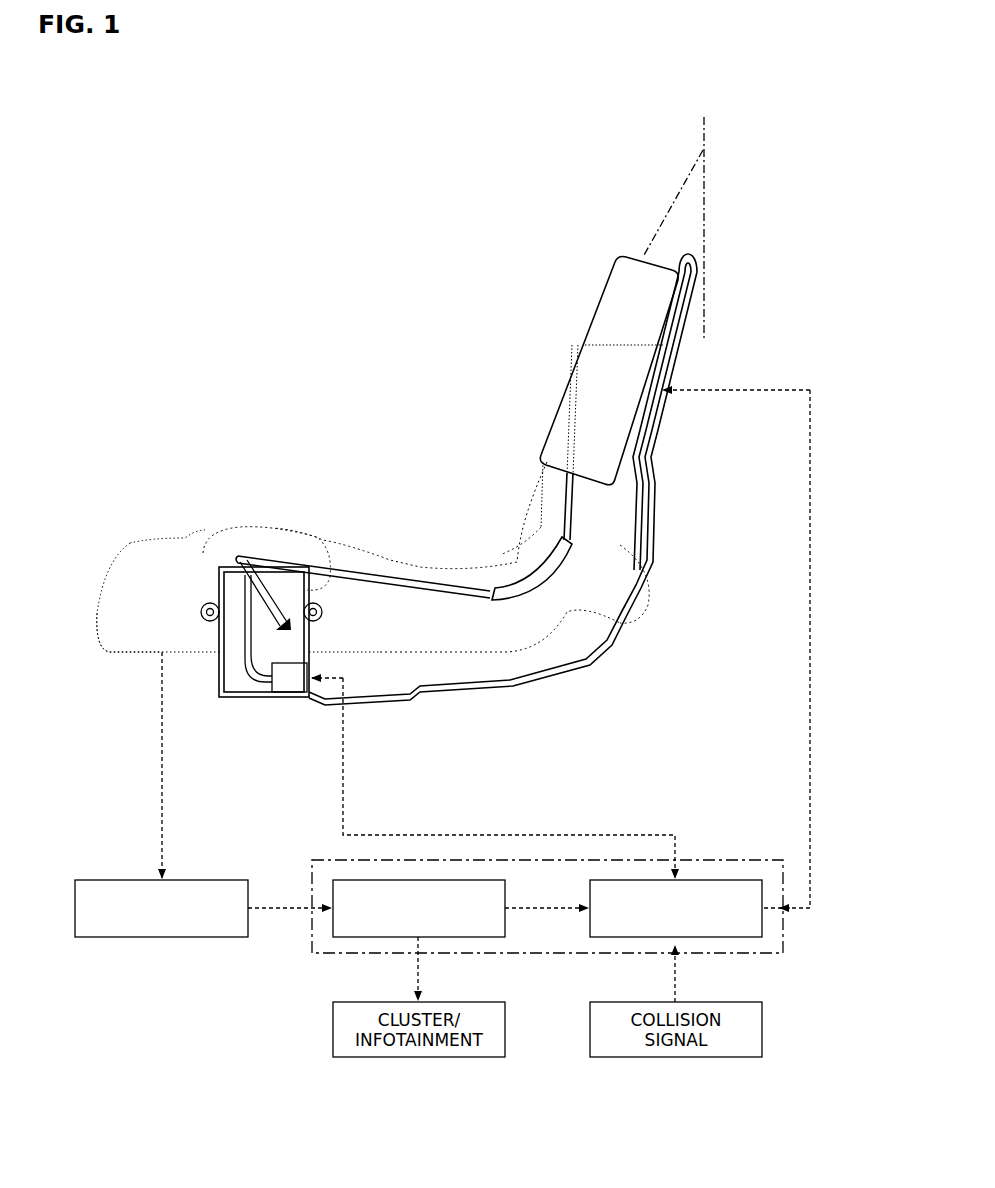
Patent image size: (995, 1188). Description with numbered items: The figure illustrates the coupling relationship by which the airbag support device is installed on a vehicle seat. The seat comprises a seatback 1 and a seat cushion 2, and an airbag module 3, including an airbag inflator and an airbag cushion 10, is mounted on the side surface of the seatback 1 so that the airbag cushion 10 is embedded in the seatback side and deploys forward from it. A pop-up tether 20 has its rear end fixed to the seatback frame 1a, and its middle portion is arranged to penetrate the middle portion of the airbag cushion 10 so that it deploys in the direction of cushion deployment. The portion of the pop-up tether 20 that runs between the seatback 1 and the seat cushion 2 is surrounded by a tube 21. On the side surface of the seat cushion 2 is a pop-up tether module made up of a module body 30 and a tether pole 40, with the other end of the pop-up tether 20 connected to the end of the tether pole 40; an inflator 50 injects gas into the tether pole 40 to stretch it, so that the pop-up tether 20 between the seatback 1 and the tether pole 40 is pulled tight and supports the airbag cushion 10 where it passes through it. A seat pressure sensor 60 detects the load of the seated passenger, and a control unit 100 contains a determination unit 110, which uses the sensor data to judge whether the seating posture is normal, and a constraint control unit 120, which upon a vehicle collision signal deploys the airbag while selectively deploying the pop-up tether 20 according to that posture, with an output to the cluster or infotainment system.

The seatback 1 is at (658, 213).
The seatback frame 1a is at (627, 535).
The seat cushion 2 is at (155, 518).
The airbag module 3 is at (578, 326).
The airbag cushion 10 is at (617, 390).
The pop-up tether 20 is at (393, 578).
The tube 21 is at (517, 590).
The module body 30 is at (330, 583).
The tether pole 40 is at (237, 586).
The inflator 50 is at (290, 683).
The seat pressure sensor 60 is at (163, 937).
The control unit 100 is at (712, 860).
The determination unit 110 is at (330, 933).
The constraint control unit 120 is at (783, 925).